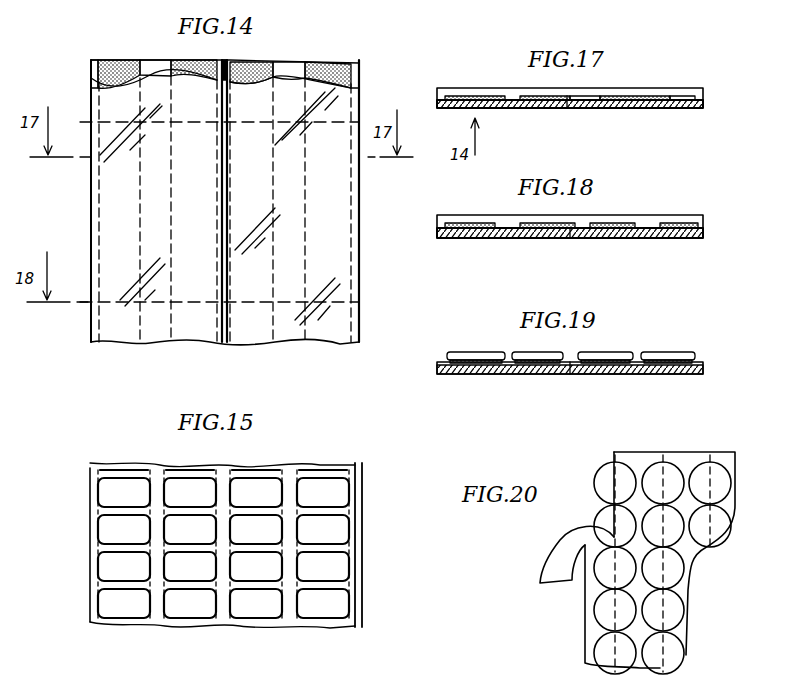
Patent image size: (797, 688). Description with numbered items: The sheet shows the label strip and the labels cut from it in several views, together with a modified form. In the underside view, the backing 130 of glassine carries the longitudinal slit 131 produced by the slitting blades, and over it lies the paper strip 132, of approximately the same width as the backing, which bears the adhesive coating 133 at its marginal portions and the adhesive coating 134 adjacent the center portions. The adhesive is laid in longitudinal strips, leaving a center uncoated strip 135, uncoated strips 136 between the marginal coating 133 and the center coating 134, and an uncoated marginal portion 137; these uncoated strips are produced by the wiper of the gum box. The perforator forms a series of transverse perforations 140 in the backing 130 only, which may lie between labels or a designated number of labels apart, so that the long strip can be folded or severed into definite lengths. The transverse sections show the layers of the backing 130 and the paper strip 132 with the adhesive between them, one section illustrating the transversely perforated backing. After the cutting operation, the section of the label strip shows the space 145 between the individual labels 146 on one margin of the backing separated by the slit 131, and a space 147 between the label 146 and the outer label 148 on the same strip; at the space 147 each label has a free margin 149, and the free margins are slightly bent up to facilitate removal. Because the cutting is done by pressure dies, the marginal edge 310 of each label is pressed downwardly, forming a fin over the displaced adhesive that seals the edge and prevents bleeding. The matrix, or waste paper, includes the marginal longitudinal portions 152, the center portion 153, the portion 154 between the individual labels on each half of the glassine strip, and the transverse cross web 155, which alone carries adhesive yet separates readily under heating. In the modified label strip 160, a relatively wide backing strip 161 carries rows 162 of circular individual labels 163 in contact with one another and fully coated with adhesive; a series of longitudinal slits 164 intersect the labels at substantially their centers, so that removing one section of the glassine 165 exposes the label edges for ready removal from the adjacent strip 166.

In FIG. 14, the backing 130 is at (97, 183).
In FIG. 17, the backing 130 is at (697, 108).
In FIG. 18, the backing 130 is at (458, 239).
In FIG. 19, the backing 130 is at (470, 370).
In FIG. 14, the longitudinal slit 131 is at (226, 325).
In FIG. 17, the longitudinal slit 131 is at (568, 106).
In FIG. 18, the longitudinal slit 131 is at (571, 239).
In FIG. 19, the longitudinal slit 131 is at (571, 374).
In FIG. 14, the paper strip 132 is at (160, 60).
In FIG. 17, the paper strip 132 is at (467, 97).
In FIG. 18, the paper strip 132 is at (448, 216).
In FIG. 14, the adhesive coating 133 is at (100, 62).
In FIG. 17, the adhesive coating 133 is at (683, 97).
In FIG. 14, the adhesive coating 134 is at (276, 64).
In FIG. 17, the adhesive coating 134 is at (528, 97).
In FIG. 14, the center uncoated strip 135 is at (232, 64).
In FIG. 17, the center uncoated strip 135 is at (573, 100).
In FIG. 17, the uncoated strip 136 is at (632, 97).
In FIG. 14, the uncoated marginal portion 137 is at (91, 72).
In FIG. 17, the uncoated marginal portion 137 is at (437, 91).
In FIG. 14, the transverse perforations 140 is at (111, 120).
In FIG. 18, the transverse perforations 140 is at (498, 239).
In FIG. 19, the space 145 is at (572, 362).
In FIG. 19, the individual label 146 is at (540, 352).
In FIG. 19, the space 147 is at (497, 354).
In FIG. 19, the outer label 148 is at (455, 352).
In FIG. 19, the free margin 149 is at (636, 358).
In FIG. 19, the marginal edge 310 is at (447, 358).
In FIG. 15, the marginal longitudinal portion 152 is at (95, 590).
In FIG. 15, the center portion 153 is at (222, 612).
In FIG. 15, the portion between individual labels 154 is at (155, 612).
In FIG. 15, the transverse cross web 155 is at (112, 513).
In FIG. 20, the label strip 160 is at (654, 536).
In FIG. 20, the backing strip 161 is at (688, 454).
In FIG. 20, the rows 162 is at (718, 488).
In FIG. 20, the individual label 163 is at (670, 535).
In FIG. 20, the longitudinal slits 164 is at (614, 456).
In FIG. 20, the section of the glassine 165 is at (592, 590).
In FIG. 20, the adjacent strip 166 is at (634, 460).